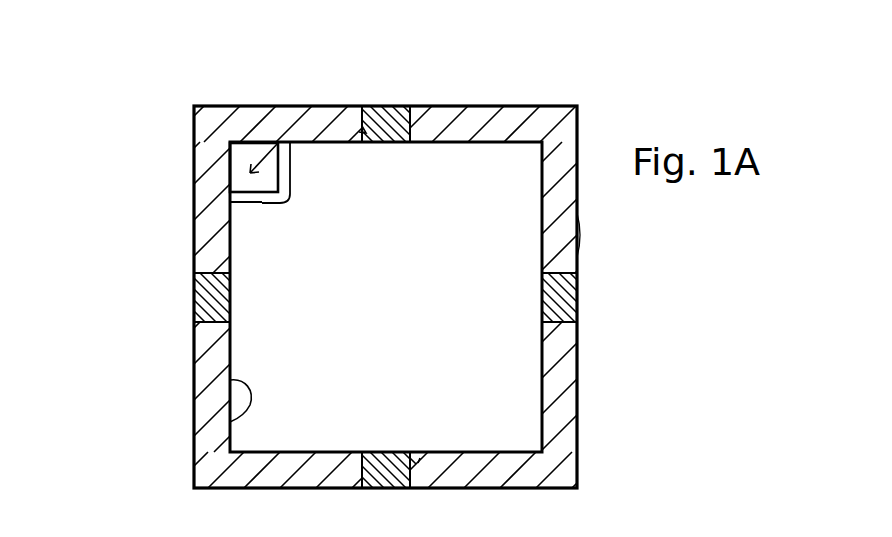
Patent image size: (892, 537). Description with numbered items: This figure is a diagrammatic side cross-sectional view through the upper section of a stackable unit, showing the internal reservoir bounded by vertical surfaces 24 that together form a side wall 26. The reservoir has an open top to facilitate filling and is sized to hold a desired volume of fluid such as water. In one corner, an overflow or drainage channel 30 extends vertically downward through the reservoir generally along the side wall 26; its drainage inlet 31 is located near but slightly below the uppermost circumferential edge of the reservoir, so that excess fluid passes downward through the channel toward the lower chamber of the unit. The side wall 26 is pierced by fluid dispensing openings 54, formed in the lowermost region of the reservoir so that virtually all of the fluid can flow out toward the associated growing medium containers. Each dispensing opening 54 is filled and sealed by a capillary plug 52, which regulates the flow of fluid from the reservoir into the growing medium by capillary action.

The vertical surface 24 is at (275, 452).
The side wall 26 is at (580, 403).
The drainage channel 30 is at (262, 203).
The drainage inlet 31 is at (278, 143).
The capillary plug 52 is at (194, 299).
The fluid dispensing opening 54 is at (390, 106).